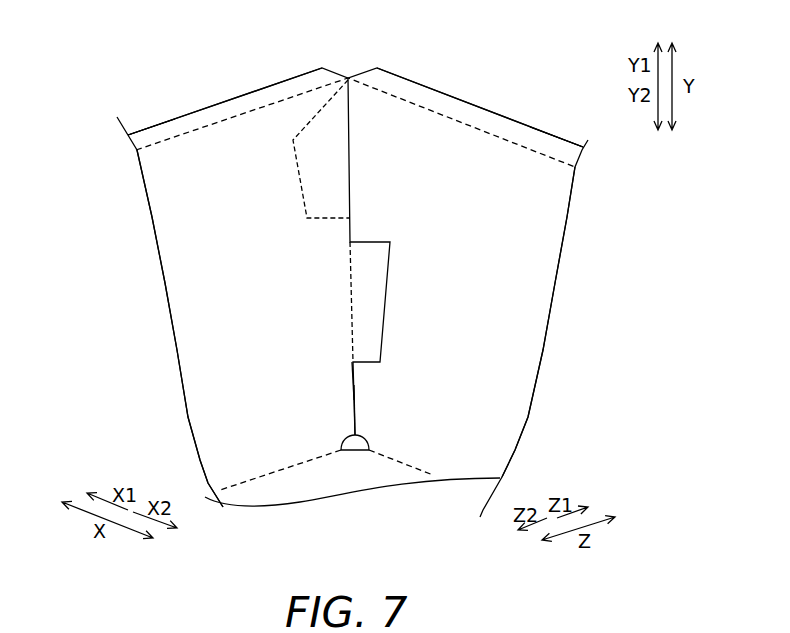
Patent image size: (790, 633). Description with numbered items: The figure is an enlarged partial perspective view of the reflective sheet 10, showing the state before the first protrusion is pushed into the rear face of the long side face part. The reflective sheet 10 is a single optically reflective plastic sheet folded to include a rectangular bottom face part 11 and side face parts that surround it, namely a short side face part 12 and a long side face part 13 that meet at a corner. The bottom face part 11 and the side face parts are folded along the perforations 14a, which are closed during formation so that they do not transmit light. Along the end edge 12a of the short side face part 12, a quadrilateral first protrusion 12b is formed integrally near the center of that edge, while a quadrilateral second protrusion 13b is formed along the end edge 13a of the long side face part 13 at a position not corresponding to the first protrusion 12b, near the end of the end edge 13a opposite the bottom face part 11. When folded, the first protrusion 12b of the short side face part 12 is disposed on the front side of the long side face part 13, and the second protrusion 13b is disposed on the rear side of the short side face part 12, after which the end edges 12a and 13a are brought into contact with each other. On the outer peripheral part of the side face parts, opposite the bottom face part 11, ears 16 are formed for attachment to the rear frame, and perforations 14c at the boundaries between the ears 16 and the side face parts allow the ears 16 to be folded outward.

The reflective sheet 10 is at (98, 58).
The bottom face part 11 is at (363, 475).
The short side face part 12 is at (273, 210).
The end edge 12a is at (351, 377).
The first protrusion 12b is at (367, 273).
The long side face part 13 is at (437, 207).
The end edge 13a is at (352, 396).
The second protrusion 13b is at (324, 166).
The perforation 14a is at (297, 458).
The perforation 14c is at (191, 134).
The ear 16 is at (157, 134).